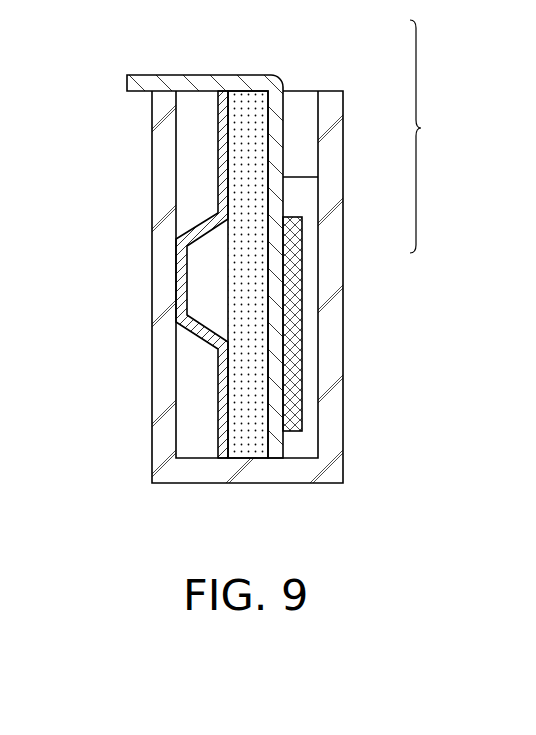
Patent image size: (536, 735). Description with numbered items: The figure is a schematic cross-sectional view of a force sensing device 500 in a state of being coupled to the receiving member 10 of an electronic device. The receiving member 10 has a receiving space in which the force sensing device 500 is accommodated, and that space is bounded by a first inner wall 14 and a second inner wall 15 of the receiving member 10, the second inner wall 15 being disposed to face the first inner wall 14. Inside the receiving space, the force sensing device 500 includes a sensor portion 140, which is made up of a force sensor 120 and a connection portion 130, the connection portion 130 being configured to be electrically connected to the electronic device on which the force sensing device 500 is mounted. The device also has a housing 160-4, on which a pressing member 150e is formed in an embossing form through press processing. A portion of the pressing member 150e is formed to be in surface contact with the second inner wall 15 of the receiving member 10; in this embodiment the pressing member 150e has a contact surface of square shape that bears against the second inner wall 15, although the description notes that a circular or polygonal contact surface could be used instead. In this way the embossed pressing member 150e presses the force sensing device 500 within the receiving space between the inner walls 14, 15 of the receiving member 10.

The force sensing device 500 is at (77, 61).
The receiving member 10 is at (348, 316).
The second inner wall 15 is at (160, 418).
The first inner wall 14 is at (336, 427).
The connection portion 130 is at (190, 80).
The housing 160-4 is at (228, 151).
The pressing member 150e is at (203, 343).
The force sensor 120 is at (295, 257).
The sensor portion 140 is at (441, 136).